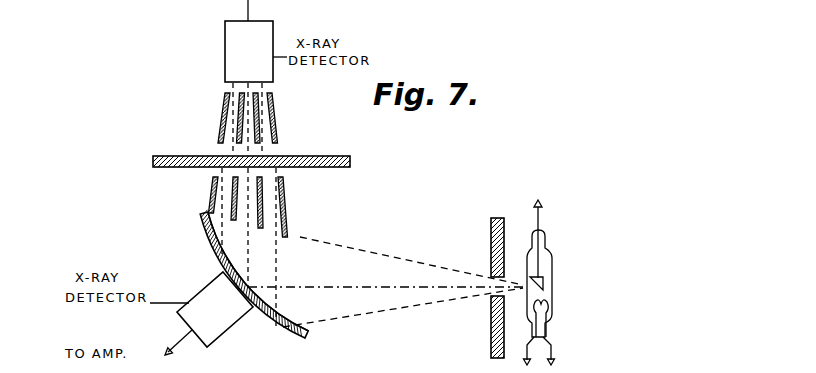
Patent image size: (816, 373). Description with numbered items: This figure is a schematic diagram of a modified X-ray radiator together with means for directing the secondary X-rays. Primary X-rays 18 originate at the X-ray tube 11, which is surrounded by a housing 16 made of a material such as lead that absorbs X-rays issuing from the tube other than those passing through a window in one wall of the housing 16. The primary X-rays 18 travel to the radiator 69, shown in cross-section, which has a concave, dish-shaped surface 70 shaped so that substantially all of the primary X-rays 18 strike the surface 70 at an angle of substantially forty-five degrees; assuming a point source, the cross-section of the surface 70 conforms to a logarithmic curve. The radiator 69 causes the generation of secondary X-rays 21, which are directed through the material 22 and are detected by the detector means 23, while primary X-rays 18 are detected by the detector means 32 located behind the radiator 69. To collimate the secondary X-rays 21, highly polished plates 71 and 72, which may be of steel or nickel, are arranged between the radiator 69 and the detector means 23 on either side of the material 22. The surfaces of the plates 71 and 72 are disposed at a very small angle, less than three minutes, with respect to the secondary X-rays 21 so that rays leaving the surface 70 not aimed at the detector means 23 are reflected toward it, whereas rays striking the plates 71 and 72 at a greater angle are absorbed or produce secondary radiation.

The X-ray tube 11 is at (546, 232).
The housing 16 is at (491, 232).
The primary X-rays 18 is at (400, 249).
The secondary X-rays 21 is at (280, 278).
The material 22 is at (350, 161).
The detector means 23 is at (226, 50).
The detector means 32 is at (228, 329).
The radiator 69 is at (202, 228).
The concave dish-shaped surface 70 is at (269, 307).
The collimating plates 71 is at (240, 124).
The collimating plates 72 is at (234, 191).